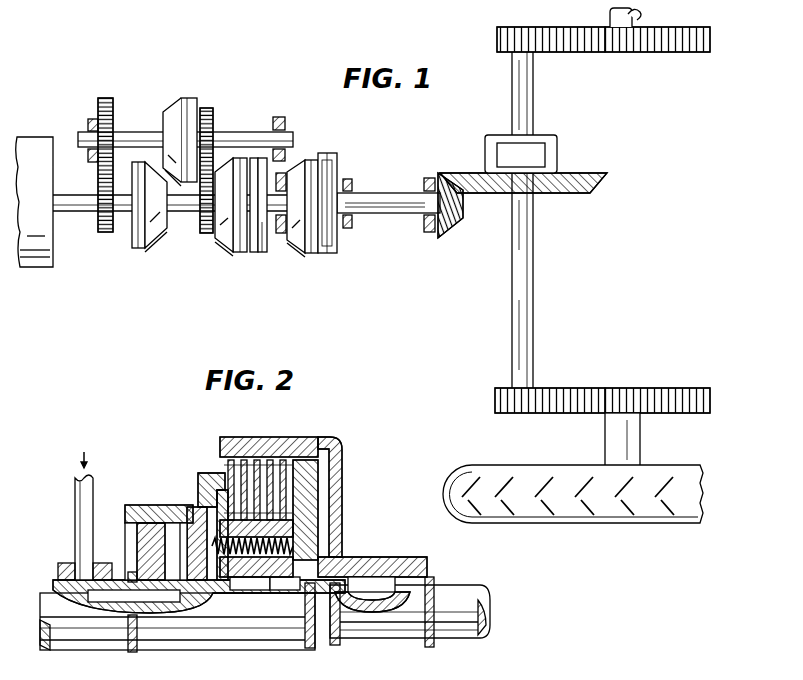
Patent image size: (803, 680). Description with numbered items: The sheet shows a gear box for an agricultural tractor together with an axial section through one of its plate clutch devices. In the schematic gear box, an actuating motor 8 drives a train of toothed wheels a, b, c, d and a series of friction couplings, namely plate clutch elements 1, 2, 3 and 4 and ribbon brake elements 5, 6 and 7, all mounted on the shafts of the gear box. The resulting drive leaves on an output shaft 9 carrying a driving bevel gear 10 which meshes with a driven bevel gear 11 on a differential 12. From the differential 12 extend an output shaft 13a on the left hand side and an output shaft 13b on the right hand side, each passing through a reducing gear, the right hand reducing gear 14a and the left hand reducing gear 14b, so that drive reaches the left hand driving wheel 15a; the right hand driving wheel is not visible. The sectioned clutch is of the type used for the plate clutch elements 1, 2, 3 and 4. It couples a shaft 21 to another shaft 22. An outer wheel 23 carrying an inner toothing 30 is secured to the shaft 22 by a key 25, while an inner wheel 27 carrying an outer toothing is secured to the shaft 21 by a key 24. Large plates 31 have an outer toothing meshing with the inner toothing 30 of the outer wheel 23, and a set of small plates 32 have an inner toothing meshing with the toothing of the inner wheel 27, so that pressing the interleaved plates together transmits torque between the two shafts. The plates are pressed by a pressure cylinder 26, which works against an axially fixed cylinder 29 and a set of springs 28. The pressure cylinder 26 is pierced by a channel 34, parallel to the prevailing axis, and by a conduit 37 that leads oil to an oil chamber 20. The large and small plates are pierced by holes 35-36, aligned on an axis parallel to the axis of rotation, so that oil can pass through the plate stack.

In FIG. 1, the plate clutch 1 is at (140, 245).
In FIG. 1, the plate clutch 2 is at (184, 100).
In FIG. 1, the plate clutch 3 is at (227, 204).
In FIG. 1, the plate clutch 4 is at (302, 206).
In FIG. 1, the ribbon brake 5 is at (242, 254).
In FIG. 1, the ribbon brake 6 is at (257, 252).
In FIG. 1, the ribbon brake 7 is at (320, 253).
In FIG. 1, the actuating motor 8 is at (34, 202).
In FIG. 1, the output shaft 9 is at (397, 199).
In FIG. 1, the driving bevel gear 10 is at (448, 234).
In FIG. 1, the driven bevel gear 11 is at (598, 182).
In FIG. 1, the differential 12 is at (560, 160).
In FIG. 1, the output shaft of the left hand differential 13a is at (537, 388).
In FIG. 1, the output shaft of the right hand differential 13b is at (535, 52).
In FIG. 1, the right hand reducing gear 14a is at (629, 388).
In FIG. 1, the left hand reducing gear 14b is at (640, 52).
In FIG. 1, the left hand driving wheel 15a is at (550, 464).
In FIG. 1, the toothed wheel a is at (104, 233).
In FIG. 1, the toothed wheel b is at (113, 116).
In FIG. 1, the toothed wheel c is at (213, 122).
In FIG. 1, the toothed wheel d is at (205, 234).
In FIG. 2, the oil chamber 20 is at (195, 595).
In FIG. 2, the shaft 21 is at (280, 645).
In FIG. 2, the shaft 22 is at (382, 643).
In FIG. 2, the outer wheel 23 is at (350, 549).
In FIG. 2, the key 24 is at (284, 585).
In FIG. 2, the key 25 is at (385, 581).
In FIG. 2, the pressure cylinder 26 is at (127, 510).
In FIG. 2, the inner wheel 27 is at (304, 540).
In FIG. 2, the set of springs 28 is at (264, 587).
In FIG. 2, the axially fixed cylinder 29 is at (137, 544).
In FIG. 2, the inner toothing 30 is at (264, 470).
In FIG. 2, the large plates 31 is at (319, 443).
In FIG. 2, the small plates 32 is at (300, 495).
In FIG. 2, the channel 34 is at (215, 498).
In FIG. 2, the holes 35-36 is at (222, 498).
In FIG. 2, the conduit 37 is at (193, 510).